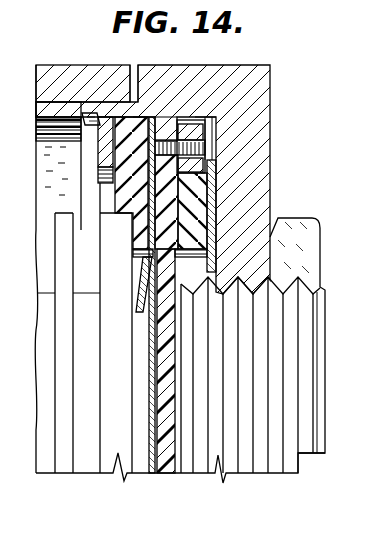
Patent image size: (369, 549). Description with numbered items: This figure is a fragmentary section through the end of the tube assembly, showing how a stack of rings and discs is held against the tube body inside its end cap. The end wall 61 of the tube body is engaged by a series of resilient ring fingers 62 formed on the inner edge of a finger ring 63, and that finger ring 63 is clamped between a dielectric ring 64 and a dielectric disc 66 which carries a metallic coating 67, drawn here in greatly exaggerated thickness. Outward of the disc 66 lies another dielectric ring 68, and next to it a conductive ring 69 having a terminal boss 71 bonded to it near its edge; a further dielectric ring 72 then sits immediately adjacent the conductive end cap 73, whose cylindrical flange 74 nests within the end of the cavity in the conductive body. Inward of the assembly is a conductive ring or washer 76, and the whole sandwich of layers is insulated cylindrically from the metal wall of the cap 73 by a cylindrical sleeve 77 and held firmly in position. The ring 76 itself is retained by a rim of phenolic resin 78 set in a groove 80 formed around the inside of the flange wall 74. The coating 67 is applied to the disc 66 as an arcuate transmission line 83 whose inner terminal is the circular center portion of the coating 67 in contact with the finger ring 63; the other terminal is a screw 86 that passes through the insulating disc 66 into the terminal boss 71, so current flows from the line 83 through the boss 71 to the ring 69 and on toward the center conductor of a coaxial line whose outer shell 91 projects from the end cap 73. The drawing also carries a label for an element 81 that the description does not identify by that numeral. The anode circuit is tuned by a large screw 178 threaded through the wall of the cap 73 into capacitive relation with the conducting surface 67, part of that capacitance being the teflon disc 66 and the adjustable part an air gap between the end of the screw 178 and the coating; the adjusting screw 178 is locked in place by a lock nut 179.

The end wall 61 is at (137, 456).
The resilient ring fingers 62 is at (135, 312).
The finger ring 63 is at (133, 244).
The dielectric ring 64 is at (142, 118).
The dielectric disc 66 is at (166, 466).
The metallic coating 67 is at (149, 371).
The dielectric ring 68 is at (215, 180).
The conductive ring 69 is at (0, 147).
The terminal boss 71 is at (201, 136).
The dielectric ring 72 is at (212, 156).
The conductive end cap 73 is at (262, 80).
The cylindrical flange 74 is at (36, 108).
The conductive ring 76 is at (108, 126).
The cylindrical sleeve 77 is at (111, 132).
The rim of phenolic resin 78 is at (97, 119).
The groove 80 is at (94, 112).
The piston 81 is at (152, 188).
The transmission line 83 is at (165, 117).
The screw 86 is at (228, 142).
The outer shell 91 is at (12, 27).
The screw 178 is at (263, 470).
The lock nut 179 is at (312, 218).